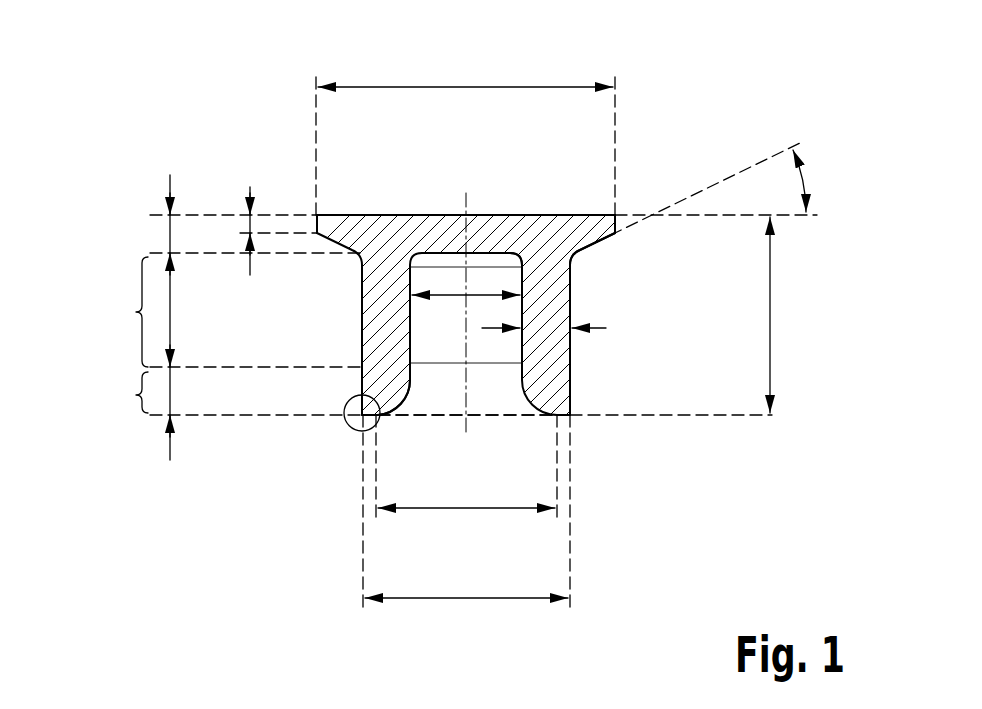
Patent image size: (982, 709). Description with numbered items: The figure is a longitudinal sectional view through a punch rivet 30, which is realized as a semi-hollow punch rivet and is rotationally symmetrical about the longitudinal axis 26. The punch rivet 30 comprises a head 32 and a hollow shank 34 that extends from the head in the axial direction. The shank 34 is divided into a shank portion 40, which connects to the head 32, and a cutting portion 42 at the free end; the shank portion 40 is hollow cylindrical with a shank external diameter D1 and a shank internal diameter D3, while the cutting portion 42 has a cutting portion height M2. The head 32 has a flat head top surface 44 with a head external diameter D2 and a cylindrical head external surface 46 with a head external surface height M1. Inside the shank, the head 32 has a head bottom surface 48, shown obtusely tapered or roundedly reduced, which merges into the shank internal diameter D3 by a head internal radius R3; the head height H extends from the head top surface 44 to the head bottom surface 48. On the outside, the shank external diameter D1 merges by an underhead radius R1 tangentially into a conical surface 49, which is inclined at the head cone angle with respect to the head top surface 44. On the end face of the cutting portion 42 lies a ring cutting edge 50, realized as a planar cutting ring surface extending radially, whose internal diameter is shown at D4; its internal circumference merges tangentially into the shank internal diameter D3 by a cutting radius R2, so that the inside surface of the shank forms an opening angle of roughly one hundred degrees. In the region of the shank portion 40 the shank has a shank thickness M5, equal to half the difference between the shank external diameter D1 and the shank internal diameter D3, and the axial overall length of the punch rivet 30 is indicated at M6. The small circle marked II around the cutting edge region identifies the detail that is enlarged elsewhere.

The punch rivet 30 is at (686, 92).
The head 32 is at (608, 208).
The shank 34 is at (562, 382).
The shank portion 40 is at (136, 312).
The cutting portion 42 is at (136, 395).
The head top surface 44 is at (368, 214).
The head external surface 46 is at (317, 226).
The head bottom surface 48 is at (436, 252).
The conical surface 49 is at (604, 244).
The ring cutting edge 50 is at (372, 420).
The longitudinal axis 26 is at (465, 417).
The shank external diameter D1 is at (468, 600).
The head external diameter D2 is at (465, 86).
The shank internal diameter D3 is at (445, 297).
The internal diameter of the cutting ring surface D4 is at (468, 510).
The head height H is at (168, 185).
The head external surface height M1 is at (250, 187).
The cutting portion height M2 is at (170, 448).
The shank thickness M5 is at (603, 328).
The axial overall length M6 is at (772, 315).
The underhead radius R1 is at (578, 259).
The cutting radius R2 is at (403, 382).
The head internal radius R3 is at (524, 250).
The detail view II is at (346, 426).